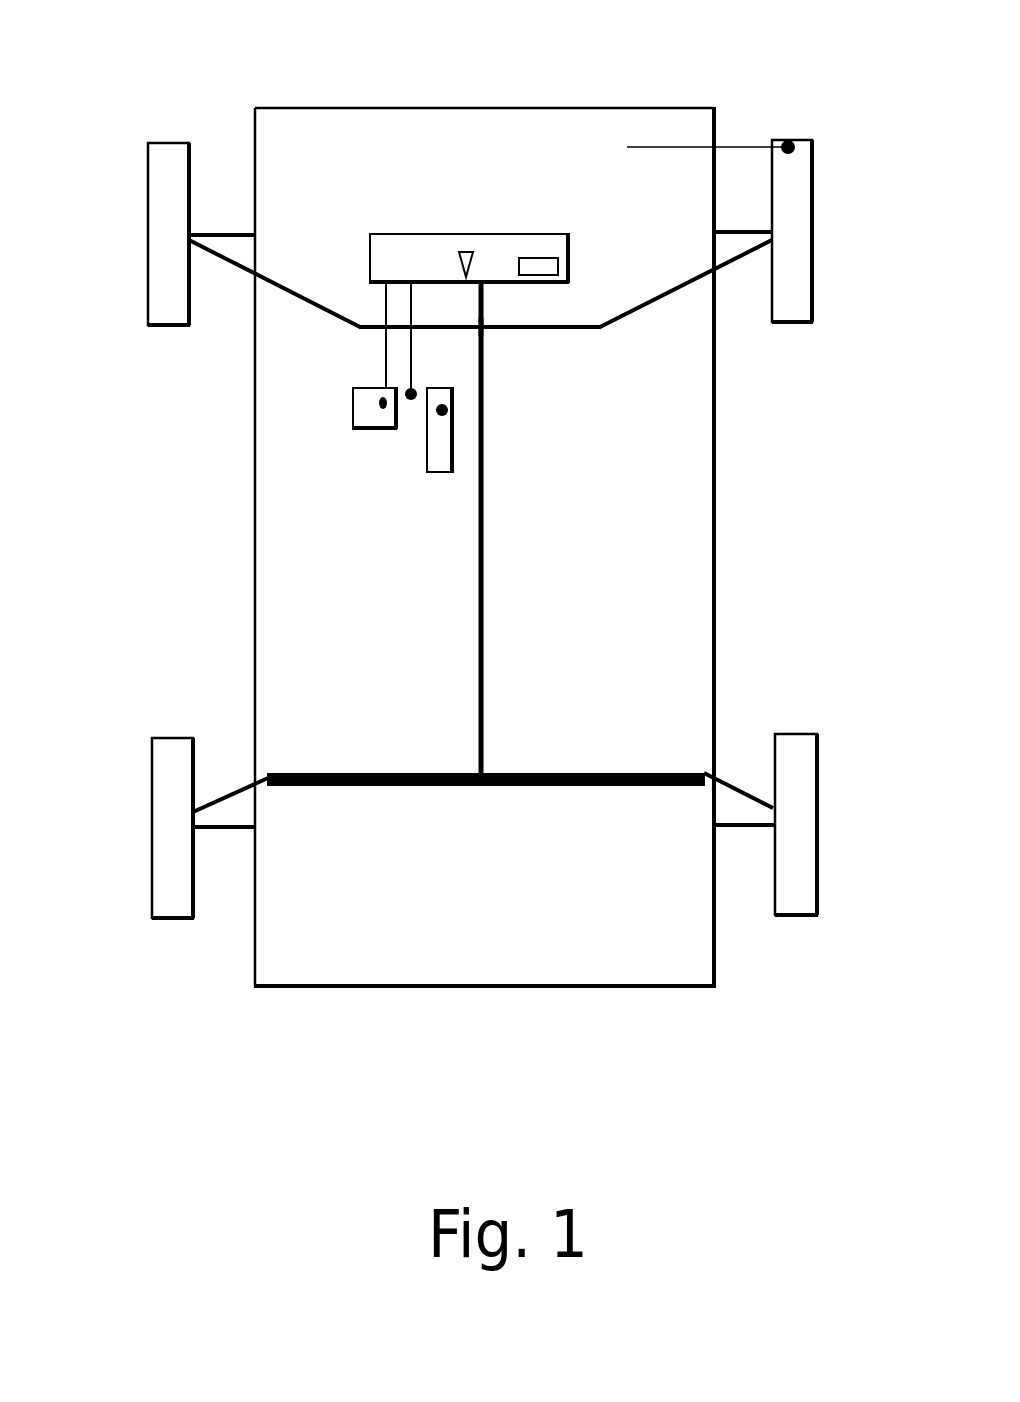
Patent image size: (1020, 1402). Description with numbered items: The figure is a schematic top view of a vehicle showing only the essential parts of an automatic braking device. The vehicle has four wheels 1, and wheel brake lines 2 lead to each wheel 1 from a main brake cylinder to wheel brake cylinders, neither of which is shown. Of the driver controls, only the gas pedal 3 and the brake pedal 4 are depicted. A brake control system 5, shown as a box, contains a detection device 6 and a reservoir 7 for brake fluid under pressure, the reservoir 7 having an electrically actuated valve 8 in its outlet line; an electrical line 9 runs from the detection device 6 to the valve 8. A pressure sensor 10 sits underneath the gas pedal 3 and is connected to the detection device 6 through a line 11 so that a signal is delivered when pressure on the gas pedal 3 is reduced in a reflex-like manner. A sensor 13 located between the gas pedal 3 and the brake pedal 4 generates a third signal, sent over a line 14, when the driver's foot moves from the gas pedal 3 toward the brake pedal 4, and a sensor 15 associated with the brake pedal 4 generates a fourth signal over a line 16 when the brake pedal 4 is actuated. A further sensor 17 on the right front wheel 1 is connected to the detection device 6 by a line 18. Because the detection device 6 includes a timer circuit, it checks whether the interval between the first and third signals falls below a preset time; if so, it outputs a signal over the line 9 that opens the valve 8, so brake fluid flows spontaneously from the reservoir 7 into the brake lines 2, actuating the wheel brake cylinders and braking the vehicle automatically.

The wheel 1 is at (148, 205).
The wheel brake line 2 is at (313, 302).
The gas pedal 3 is at (437, 473).
The brake pedal 4 is at (355, 402).
The brake control system 5 is at (494, 218).
The detection device 6 is at (393, 248).
The reservoir 7 is at (547, 275).
The electrically actuated valve 8 is at (484, 297).
The electrical line 9 is at (466, 252).
The pressure sensor 10 is at (460, 283).
The line 11 is at (483, 332).
The sensor 13 is at (413, 402).
The line 14 is at (410, 372).
The sensor 15 is at (385, 408).
The line 16 is at (385, 343).
The sensor 17 is at (788, 143).
The line 18 is at (437, 233).